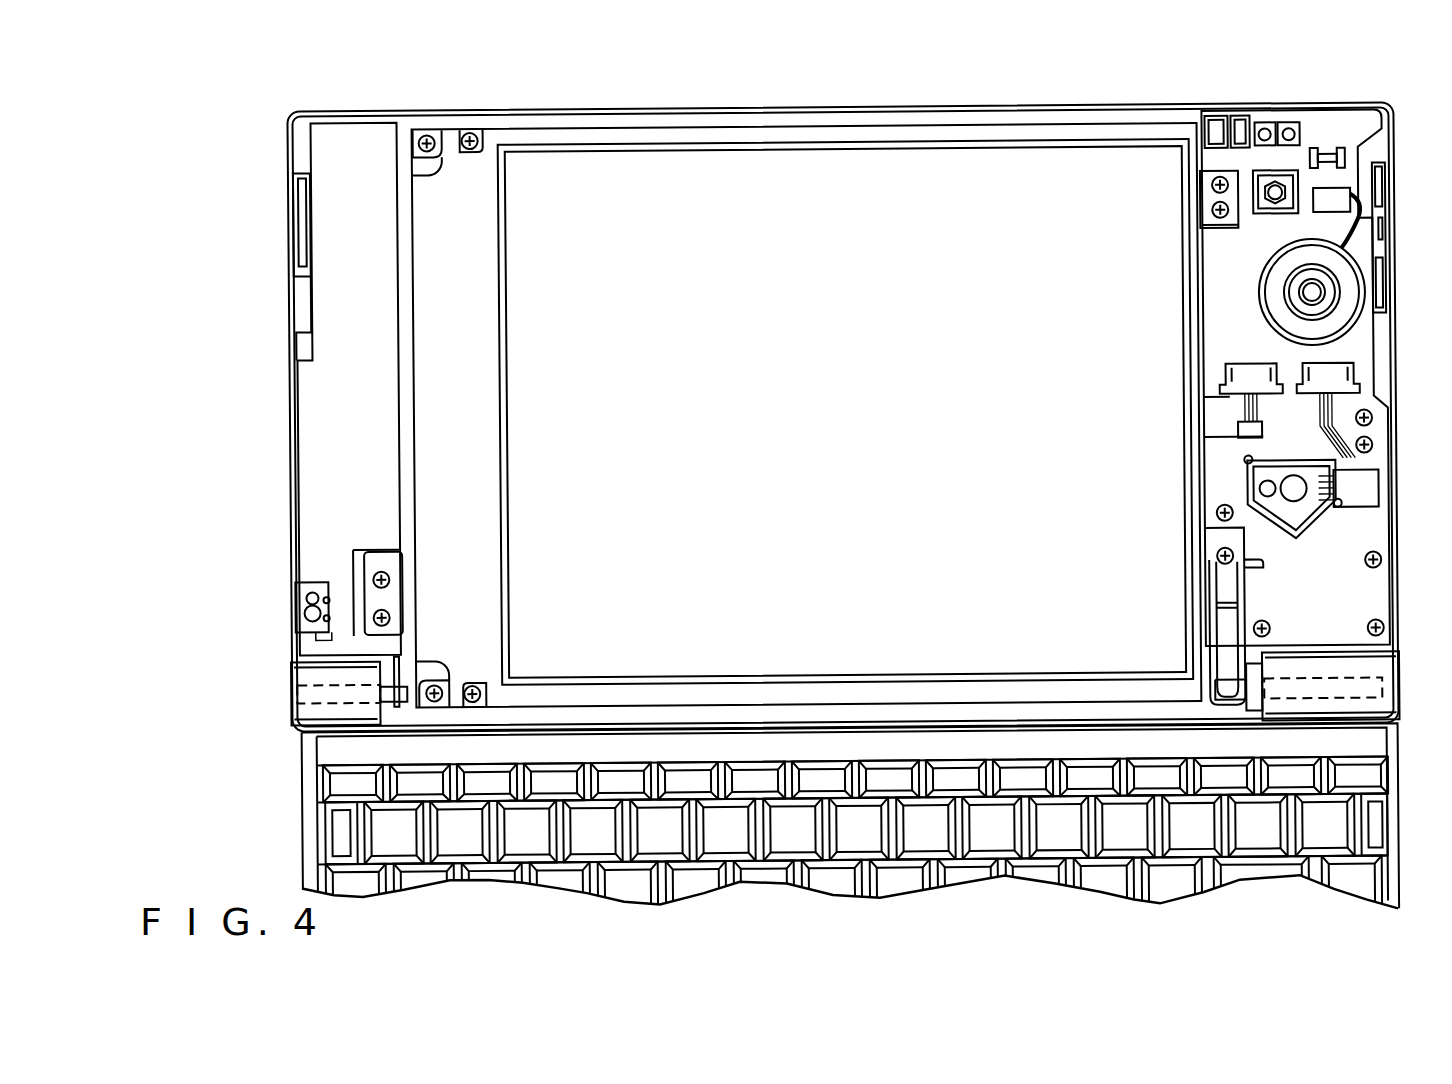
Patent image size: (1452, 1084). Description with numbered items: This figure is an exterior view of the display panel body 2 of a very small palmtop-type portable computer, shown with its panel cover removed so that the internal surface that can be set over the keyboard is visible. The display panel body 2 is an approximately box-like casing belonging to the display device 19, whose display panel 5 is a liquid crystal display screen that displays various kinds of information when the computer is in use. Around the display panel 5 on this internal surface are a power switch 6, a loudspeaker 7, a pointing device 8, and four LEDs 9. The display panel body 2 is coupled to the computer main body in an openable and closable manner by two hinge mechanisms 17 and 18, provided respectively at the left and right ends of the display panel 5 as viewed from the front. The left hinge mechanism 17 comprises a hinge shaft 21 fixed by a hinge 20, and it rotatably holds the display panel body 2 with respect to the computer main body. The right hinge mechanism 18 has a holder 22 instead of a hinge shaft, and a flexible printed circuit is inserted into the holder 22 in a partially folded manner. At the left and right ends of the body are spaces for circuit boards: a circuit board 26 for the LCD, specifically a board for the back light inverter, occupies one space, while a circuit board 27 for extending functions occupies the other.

The display panel body 2 is at (740, 106).
The display panel 5 is at (929, 136).
The power switch 6 is at (1276, 208).
The loudspeaker 7 is at (1272, 312).
The pointing device 8 is at (1300, 508).
The LEDs 9 is at (1207, 104).
The hinge mechanism 17 is at (278, 707).
The hinge mechanism 18 is at (1397, 690).
The display device 19 is at (521, 124).
The hinge 20 is at (390, 614).
The hinge shaft 21 is at (318, 687).
The holder 22 is at (1246, 626).
The circuit board 26 is at (341, 119).
The circuit board 27 is at (1391, 127).